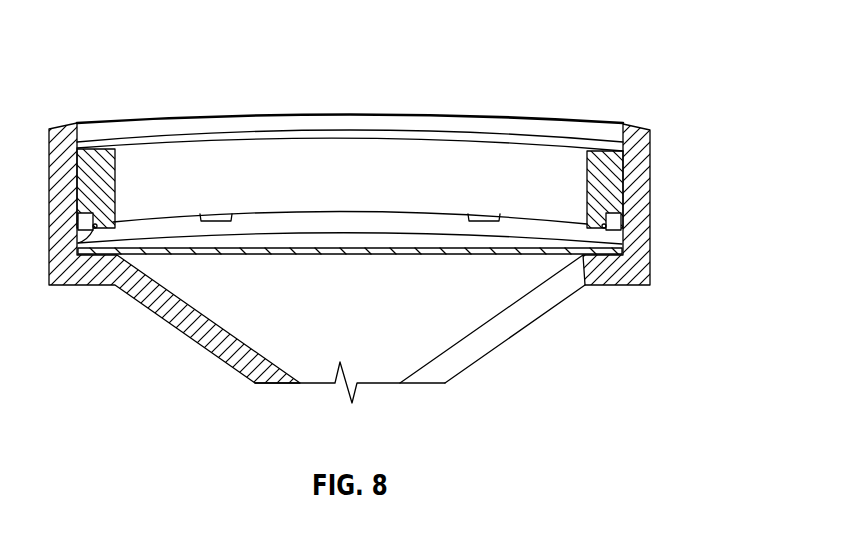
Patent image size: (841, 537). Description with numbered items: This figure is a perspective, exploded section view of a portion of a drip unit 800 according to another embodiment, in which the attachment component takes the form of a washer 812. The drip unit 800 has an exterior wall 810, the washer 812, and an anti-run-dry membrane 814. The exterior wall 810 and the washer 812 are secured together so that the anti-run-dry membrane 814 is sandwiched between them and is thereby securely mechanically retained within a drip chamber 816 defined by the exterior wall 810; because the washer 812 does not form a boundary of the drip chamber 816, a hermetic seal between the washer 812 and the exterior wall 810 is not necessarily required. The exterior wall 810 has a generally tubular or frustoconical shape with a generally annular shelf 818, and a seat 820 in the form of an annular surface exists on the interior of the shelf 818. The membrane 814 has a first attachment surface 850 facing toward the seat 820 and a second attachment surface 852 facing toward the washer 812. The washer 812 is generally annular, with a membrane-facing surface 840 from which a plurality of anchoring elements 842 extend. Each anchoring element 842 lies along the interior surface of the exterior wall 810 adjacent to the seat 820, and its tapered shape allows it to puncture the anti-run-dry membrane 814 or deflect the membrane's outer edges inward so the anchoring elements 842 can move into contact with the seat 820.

The drip unit 800 is at (663, 52).
The exterior wall 810 is at (653, 124).
The washer 812 is at (209, 119).
The anti-run-dry membrane 814 is at (251, 263).
The drip chamber 816 is at (146, 127).
The shelf 818 is at (592, 293).
The seat 820 is at (100, 248).
The membrane-facing surface 840 is at (508, 223).
The anchoring elements 842 is at (225, 222).
The first attachment surface 850 is at (598, 248).
The second attachment surface 852 is at (530, 240).